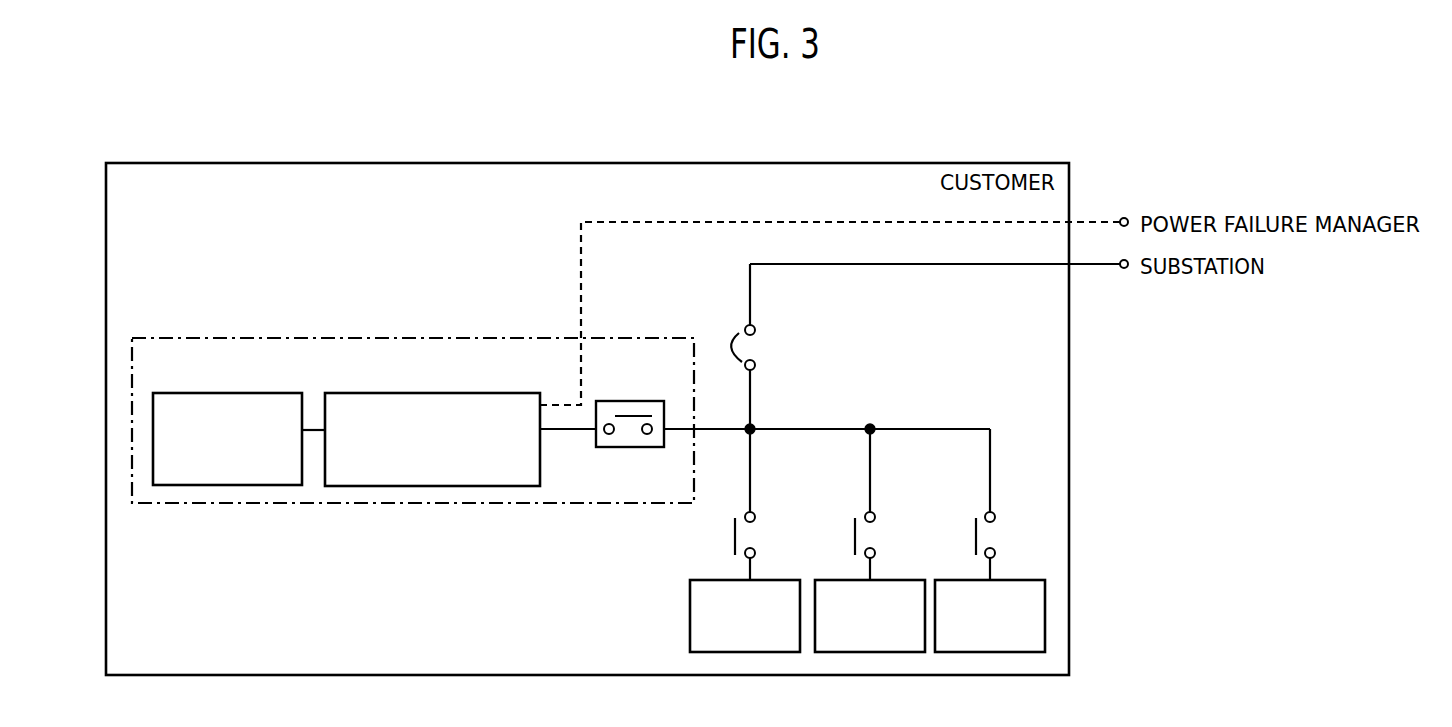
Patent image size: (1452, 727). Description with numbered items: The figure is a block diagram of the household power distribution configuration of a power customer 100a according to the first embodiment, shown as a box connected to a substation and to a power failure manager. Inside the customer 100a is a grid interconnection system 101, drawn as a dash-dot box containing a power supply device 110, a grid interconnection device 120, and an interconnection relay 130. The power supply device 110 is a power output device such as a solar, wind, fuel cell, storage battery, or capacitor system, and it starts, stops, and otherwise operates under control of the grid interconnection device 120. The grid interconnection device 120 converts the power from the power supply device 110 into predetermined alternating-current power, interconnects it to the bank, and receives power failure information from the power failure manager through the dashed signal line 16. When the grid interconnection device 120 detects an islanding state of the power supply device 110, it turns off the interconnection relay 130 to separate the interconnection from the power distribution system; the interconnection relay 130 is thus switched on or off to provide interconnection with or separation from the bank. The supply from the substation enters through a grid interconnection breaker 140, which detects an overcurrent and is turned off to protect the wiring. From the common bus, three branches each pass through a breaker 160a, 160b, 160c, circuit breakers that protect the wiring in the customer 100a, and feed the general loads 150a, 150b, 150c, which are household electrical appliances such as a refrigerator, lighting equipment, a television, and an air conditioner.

The customer 100a is at (645, 163).
The signal line 16 is at (808, 221).
The grid interconnection system 101 is at (365, 338).
The power supply device 110 is at (215, 393).
The grid interconnection device 120 is at (490, 392).
The interconnection relay 130 is at (618, 400).
The grid interconnection breaker 140 is at (738, 333).
The general load 150a is at (728, 580).
The general load 150b is at (850, 580).
The general load 150c is at (968, 580).
The breaker 160a is at (735, 532).
The breaker 160b is at (855, 535).
The breaker 160c is at (976, 535).